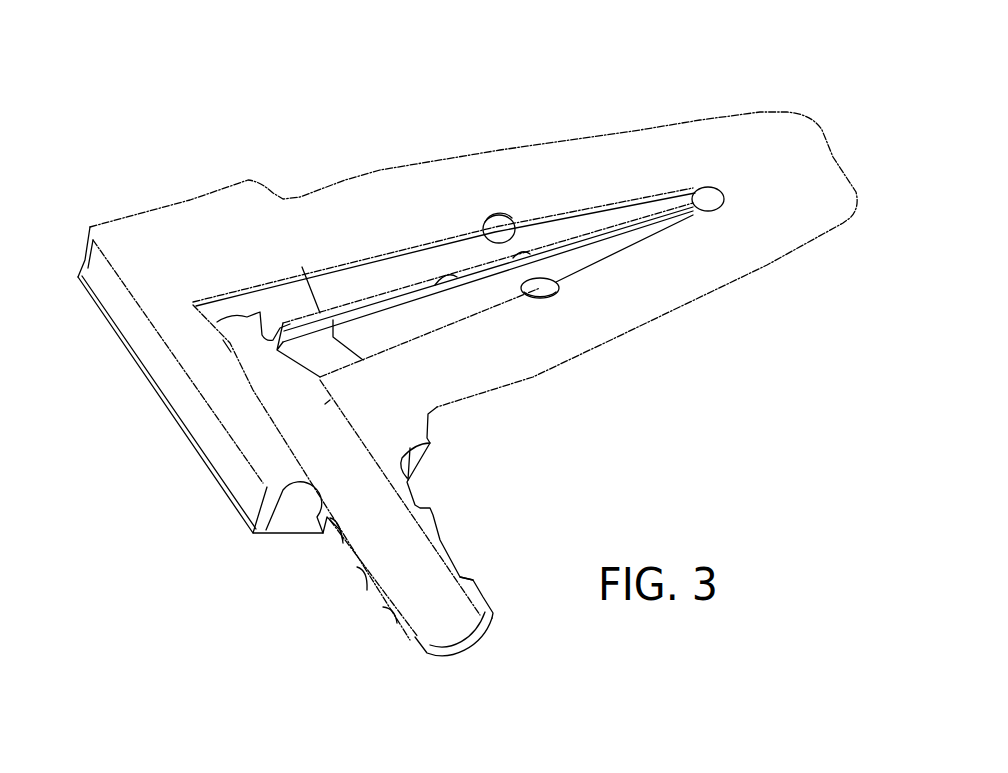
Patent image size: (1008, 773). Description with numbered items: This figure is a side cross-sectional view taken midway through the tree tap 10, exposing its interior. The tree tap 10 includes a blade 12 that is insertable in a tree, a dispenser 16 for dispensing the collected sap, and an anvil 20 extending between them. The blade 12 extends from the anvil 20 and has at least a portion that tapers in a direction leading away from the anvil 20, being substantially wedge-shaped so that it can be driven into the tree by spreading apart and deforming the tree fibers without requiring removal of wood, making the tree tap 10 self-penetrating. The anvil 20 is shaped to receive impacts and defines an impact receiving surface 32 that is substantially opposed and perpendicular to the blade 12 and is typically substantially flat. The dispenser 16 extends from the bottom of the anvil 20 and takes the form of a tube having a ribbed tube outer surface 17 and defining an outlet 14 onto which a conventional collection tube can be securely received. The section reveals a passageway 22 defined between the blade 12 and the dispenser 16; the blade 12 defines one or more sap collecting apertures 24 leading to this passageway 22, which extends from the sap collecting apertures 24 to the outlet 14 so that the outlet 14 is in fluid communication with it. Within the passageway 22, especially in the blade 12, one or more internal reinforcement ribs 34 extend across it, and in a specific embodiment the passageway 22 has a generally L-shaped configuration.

The tree tap 10 is at (370, 117).
The blade 12 is at (488, 138).
The outlet 14 is at (475, 637).
The dispenser 16 is at (435, 648).
The ribbed tube outer surface 17 is at (483, 590).
The anvil 20 is at (190, 200).
The passageway 22 is at (325, 407).
The sap collecting aperture 24 is at (517, 227).
The impact receiving surface 32 is at (178, 397).
The internal reinforcement rib 34 is at (407, 293).